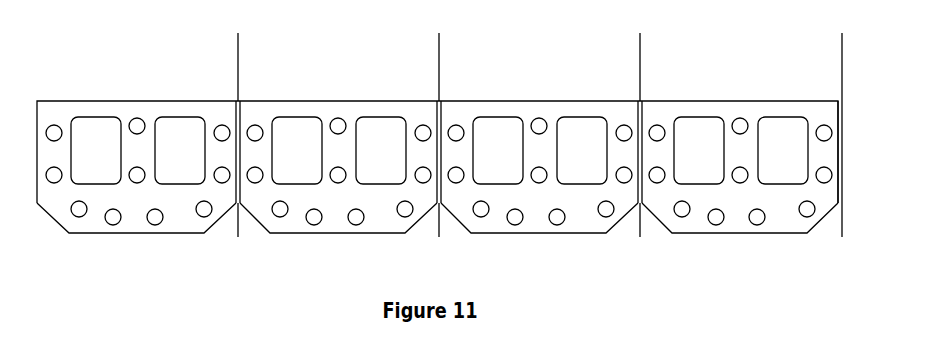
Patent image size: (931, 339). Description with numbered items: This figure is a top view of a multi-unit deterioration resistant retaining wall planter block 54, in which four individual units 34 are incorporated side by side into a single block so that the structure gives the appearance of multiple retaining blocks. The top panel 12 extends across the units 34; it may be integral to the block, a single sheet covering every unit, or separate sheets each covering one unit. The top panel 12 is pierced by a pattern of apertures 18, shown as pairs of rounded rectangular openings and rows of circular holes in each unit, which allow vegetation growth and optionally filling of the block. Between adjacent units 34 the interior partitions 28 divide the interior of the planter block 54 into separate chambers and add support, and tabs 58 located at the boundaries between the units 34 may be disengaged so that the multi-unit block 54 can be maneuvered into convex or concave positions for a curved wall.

The top panel 12 is at (172, 110).
The apertures 18 is at (88, 133).
The interior partitions 28 is at (235, 125).
The units 34 is at (97, 225).
The multi-unit retaining planter block 54 is at (63, 257).
The tabs 58 is at (539, 133).